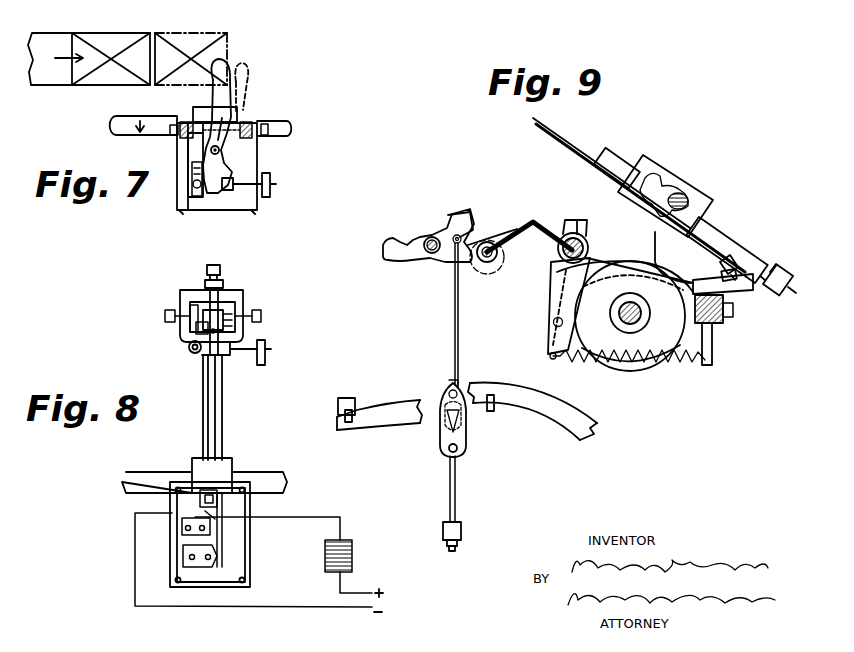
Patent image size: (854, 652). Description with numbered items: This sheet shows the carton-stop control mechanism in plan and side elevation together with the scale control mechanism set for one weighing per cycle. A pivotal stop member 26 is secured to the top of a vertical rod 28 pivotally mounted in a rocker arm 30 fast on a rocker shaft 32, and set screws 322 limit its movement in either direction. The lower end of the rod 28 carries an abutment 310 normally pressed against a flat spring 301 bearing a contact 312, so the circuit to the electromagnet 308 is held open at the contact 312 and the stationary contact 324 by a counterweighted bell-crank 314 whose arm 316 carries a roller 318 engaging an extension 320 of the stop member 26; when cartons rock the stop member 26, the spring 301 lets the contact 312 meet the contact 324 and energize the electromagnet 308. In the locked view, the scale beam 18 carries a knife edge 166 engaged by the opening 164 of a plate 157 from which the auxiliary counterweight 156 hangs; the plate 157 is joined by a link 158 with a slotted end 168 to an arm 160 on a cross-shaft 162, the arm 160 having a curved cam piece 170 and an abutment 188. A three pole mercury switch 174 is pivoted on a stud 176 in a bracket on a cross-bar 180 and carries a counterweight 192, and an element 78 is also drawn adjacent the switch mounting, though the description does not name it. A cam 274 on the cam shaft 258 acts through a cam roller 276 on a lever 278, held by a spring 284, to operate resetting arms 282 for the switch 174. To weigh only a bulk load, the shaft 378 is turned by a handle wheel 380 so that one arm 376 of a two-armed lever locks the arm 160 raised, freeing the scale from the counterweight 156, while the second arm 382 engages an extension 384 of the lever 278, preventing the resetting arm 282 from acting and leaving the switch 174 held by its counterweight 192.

In FIG. 9, the scale beam 18 is at (560, 417).
In FIG. 7, the pivotal stop member 26 is at (238, 93).
In FIG. 7, the vertical rod 28 is at (221, 151).
In FIG. 8, the vertical rod 28 is at (238, 336).
In FIG. 7, the rocker arm 30 is at (188, 140).
In FIG. 8, the rocker arm 30 is at (224, 406).
In FIG. 7, the rocker shaft 32 is at (275, 122).
In FIG. 8, the rocker shaft 32 is at (262, 478).
In FIG. 9, the needle rod 78 is at (683, 253).
In FIG. 9, the auxiliary counterweight 156 is at (461, 533).
In FIG. 9, the plate 157 is at (458, 455).
In FIG. 9, the link 158 is at (453, 328).
In FIG. 9, the arm 160 is at (448, 212).
In FIG. 9, the cross-shaft 162 is at (428, 236).
In FIG. 9, the opening 164 is at (442, 446).
In FIG. 9, the knife edge 166 is at (460, 420).
In FIG. 9, the slotted end 168 is at (450, 386).
In FIG. 9, the curved cam piece 170 is at (386, 250).
In FIG. 9, the three pole mercury switch 174 is at (658, 172).
In FIG. 9, the stud 176 is at (672, 186).
In FIG. 9, the cross-bar 180 is at (717, 325).
In FIG. 9, the abutment 188 is at (466, 212).
In FIG. 9, the counterweight 192 is at (780, 262).
In FIG. 9, the cam shaft 258 is at (633, 320).
In FIG. 9, the cam 274 is at (657, 343).
In FIG. 9, the cam roller 276 is at (553, 322).
In FIG. 9, the lever 278 is at (556, 292).
In FIG. 9, the resetting arms 282 is at (745, 298).
In FIG. 9, the spring 284 is at (583, 362).
In FIG. 8, the spring 301 is at (220, 513).
In FIG. 8, the electromagnet 308 is at (352, 550).
In FIG. 8, the abutment 310 is at (200, 500).
In FIG. 8, the contact 312 is at (217, 523).
In FIG. 8, the counterweighted bell-crank 314 is at (200, 352).
In FIG. 8, the arm 316 is at (197, 329).
In FIG. 7, the roller 318 is at (194, 186).
In FIG. 8, the roller 318 is at (191, 312).
In FIG. 7, the extension 320 is at (209, 196).
In FIG. 8, the extension 320 is at (222, 312).
In FIG. 7, the set screws 322 is at (170, 122).
In FIG. 8, the set screws 322 is at (165, 316).
In FIG. 8, the stationary contact 324 is at (195, 515).
In FIG. 9, the arm 376 is at (487, 242).
In FIG. 9, the elongated shaft 378 is at (503, 240).
In FIG. 9, the handle wheel 380 is at (477, 270).
In FIG. 9, the second arm 382 is at (520, 235).
In FIG. 9, the extension 384 is at (560, 230).